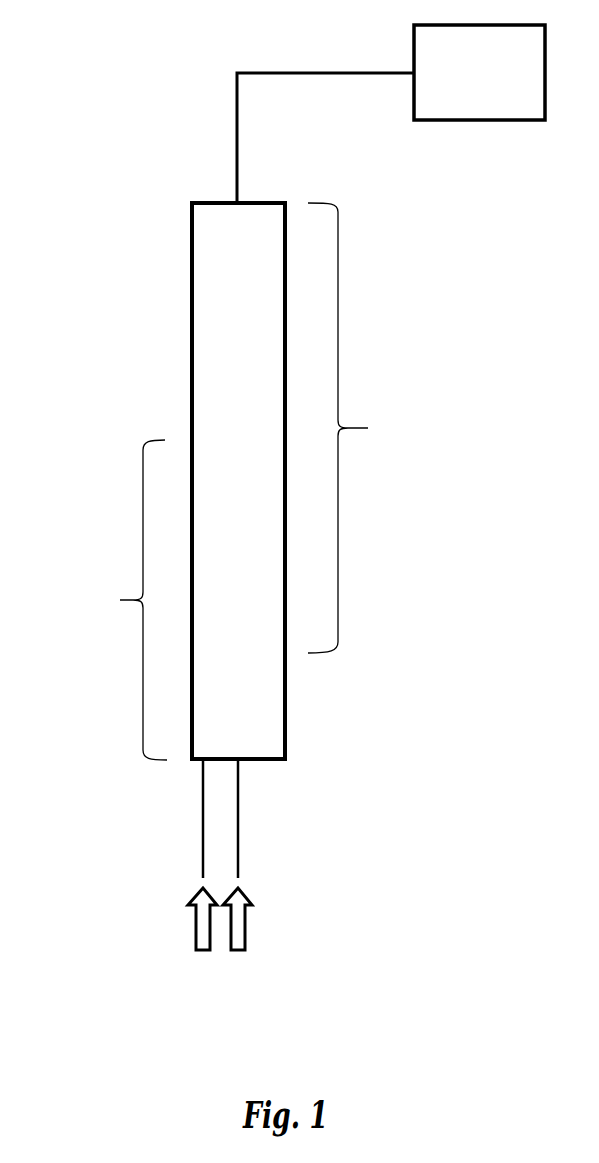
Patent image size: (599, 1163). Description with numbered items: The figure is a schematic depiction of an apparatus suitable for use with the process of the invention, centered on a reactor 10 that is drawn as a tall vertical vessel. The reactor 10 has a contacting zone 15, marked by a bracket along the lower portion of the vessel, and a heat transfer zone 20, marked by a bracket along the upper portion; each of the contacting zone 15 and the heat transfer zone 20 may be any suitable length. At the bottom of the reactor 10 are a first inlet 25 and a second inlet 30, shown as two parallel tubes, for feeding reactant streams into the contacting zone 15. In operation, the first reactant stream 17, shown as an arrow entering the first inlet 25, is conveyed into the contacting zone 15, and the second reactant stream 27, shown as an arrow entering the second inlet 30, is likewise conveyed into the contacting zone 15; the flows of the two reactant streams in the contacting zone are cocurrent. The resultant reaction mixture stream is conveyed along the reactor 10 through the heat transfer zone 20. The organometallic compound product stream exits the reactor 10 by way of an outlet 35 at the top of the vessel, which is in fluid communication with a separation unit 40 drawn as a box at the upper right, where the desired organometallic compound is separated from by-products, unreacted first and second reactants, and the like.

The reactor 10 is at (255, 466).
The contacting zone 15 is at (122, 600).
The first reactant stream 17 is at (178, 927).
The heat transfer zone 20 is at (358, 428).
The first inlet 25 is at (190, 832).
The second reactant stream 27 is at (262, 915).
The second inlet 30 is at (248, 819).
The outlet 35 is at (225, 148).
The separation unit 40 is at (465, 83).